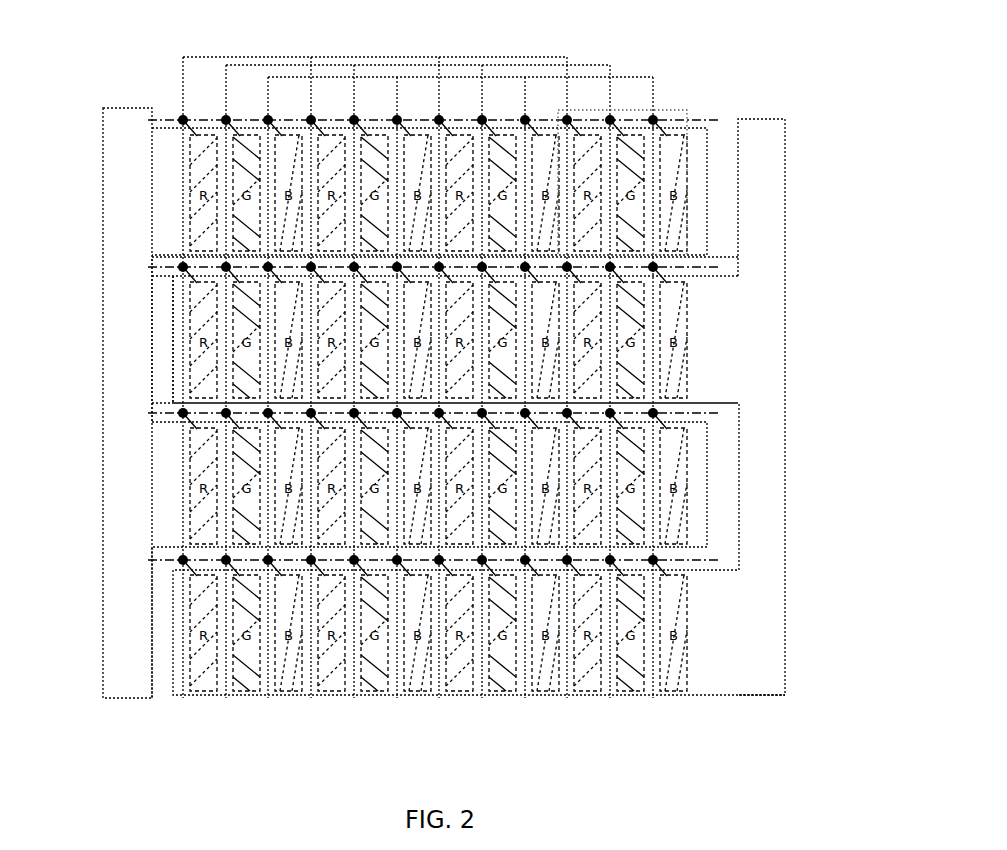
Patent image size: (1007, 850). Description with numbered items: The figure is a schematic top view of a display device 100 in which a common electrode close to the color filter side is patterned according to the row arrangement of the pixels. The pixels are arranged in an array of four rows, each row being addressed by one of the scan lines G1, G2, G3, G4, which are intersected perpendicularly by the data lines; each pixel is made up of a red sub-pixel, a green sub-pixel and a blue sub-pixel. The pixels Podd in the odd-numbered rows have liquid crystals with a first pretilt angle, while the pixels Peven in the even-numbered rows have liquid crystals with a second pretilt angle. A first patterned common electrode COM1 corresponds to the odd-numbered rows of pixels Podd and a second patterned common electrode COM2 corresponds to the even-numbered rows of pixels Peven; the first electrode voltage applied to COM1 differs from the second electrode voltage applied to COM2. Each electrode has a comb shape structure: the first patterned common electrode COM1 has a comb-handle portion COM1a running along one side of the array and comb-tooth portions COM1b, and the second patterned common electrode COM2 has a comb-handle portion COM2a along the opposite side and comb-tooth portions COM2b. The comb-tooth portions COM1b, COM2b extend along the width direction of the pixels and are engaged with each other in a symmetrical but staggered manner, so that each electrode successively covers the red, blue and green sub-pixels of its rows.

The display device 100 is at (250, 46).
The first patterned common electrode COM1 is at (152, 112).
The second patterned common electrode COM2 is at (760, 128).
The comb-handle portion of the first patterned common electrode COM1a is at (137, 374).
The comb-tooth portion of the first patterned common electrode COM1b is at (700, 488).
The comb-handle portion of the second patterned common electrode COM2a is at (755, 236).
The comb-tooth portion of the second patterned common electrode COM2b is at (180, 636).
The scan line G1 is at (414, 133).
The scan line G2 is at (415, 265).
The scan line G3 is at (415, 421).
The scan line G4 is at (415, 550).
The pixel in odd-numbered row Podd is at (178, 336).
The pixel in even-numbered row Peven is at (718, 90).